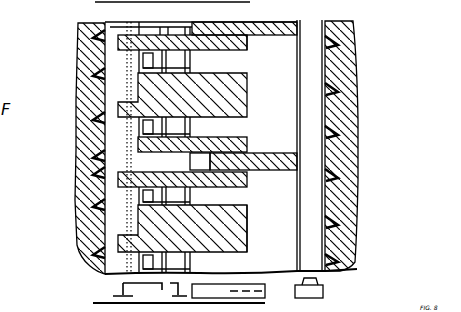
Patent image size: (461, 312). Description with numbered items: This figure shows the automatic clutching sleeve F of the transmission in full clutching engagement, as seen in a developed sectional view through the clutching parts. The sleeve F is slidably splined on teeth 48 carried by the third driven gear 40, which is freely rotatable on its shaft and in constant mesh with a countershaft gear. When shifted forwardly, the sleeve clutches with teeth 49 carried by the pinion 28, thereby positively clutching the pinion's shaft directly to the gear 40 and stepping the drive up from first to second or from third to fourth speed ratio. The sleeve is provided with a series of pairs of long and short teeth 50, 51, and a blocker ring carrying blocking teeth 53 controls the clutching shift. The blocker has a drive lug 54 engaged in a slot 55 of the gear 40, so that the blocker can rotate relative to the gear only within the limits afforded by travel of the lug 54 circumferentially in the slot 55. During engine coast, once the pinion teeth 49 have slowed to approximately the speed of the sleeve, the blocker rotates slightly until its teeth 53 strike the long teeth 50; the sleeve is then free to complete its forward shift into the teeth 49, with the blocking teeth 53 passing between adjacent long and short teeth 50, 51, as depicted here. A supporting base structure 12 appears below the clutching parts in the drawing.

The base 12 is at (208, 295).
The pinion 28 is at (82, 178).
The third driven gear 40 is at (362, 159).
The teeth 48 is at (268, 171).
The teeth 49 is at (147, 57).
The long teeth 50 is at (120, 107).
The short teeth 51 is at (140, 77).
The blocking teeth 53 is at (188, 59).
The drive lug 54 is at (220, 138).
The slot 55 is at (222, 135).